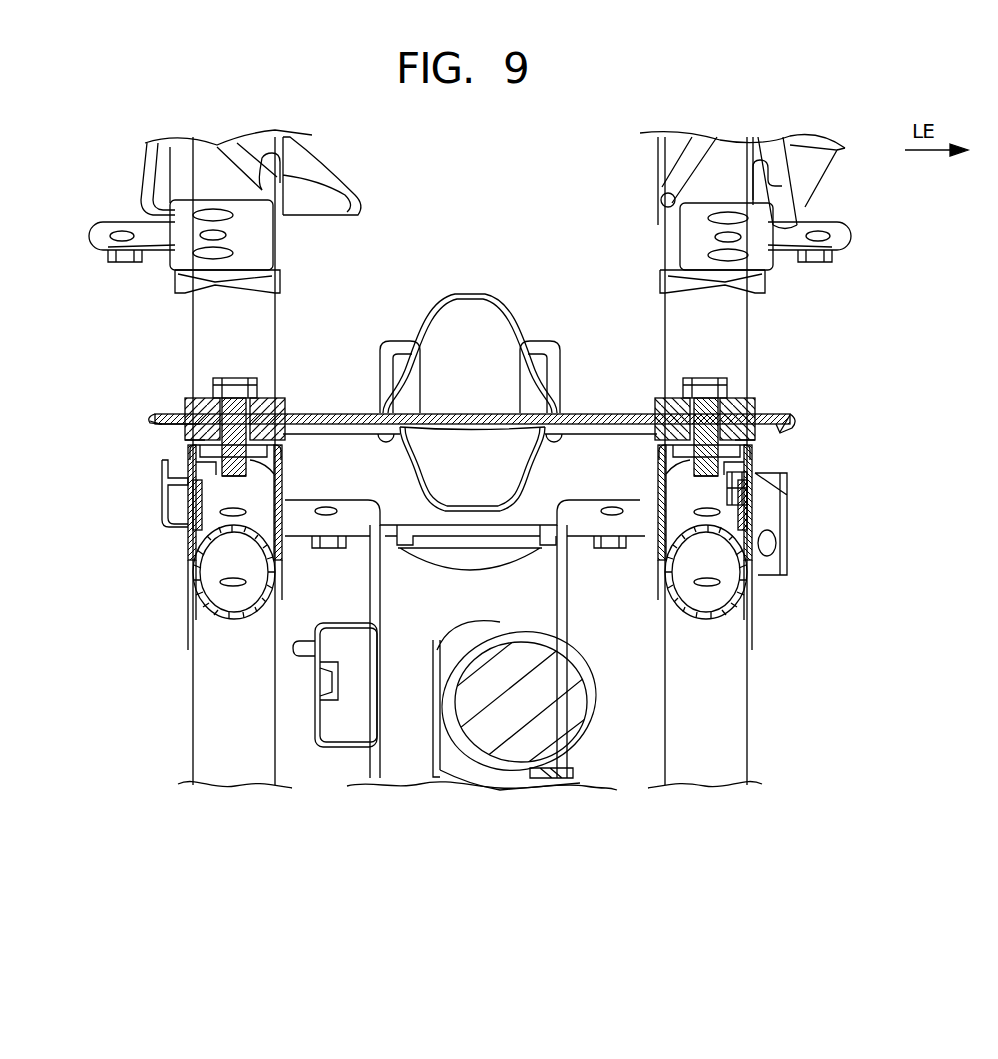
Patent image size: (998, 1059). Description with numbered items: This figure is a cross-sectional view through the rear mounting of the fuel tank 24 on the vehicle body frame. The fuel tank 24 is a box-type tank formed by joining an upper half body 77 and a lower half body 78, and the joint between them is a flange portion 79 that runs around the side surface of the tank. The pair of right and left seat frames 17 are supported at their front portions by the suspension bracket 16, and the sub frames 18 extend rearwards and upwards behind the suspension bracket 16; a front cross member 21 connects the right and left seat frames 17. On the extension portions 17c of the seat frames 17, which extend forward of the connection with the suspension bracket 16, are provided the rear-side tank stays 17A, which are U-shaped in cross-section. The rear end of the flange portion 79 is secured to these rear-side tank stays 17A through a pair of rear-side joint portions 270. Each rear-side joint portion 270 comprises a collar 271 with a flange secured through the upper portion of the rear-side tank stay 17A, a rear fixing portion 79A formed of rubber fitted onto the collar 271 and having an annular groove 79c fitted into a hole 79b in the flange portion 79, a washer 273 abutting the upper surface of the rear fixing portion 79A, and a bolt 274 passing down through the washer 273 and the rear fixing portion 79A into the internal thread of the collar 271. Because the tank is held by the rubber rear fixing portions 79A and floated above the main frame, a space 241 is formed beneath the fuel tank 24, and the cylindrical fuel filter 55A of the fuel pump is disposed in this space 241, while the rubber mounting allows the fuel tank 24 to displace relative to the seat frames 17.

The suspension bracket 16 is at (360, 757).
The seat frame 17 is at (215, 330).
The rear-side tank stay 17A is at (186, 538).
The extension portion 17c is at (215, 612).
The sub frame 18 is at (222, 712).
The front cross member 21 is at (345, 470).
The fuel tank 24 is at (482, 290).
The fuel filter 55A is at (560, 718).
The upper half body 77 is at (445, 293).
The lower half body 78 is at (533, 470).
The flange portion 79 is at (352, 413).
The rear fixing portion 79A is at (190, 420).
The hole 79b is at (283, 415).
The annular groove 79c is at (200, 440).
The space 241 is at (624, 658).
The rear-side joint portion 270 is at (178, 384).
The collar 271 is at (192, 490).
The washer 273 is at (268, 397).
The bolt 274 is at (250, 398).